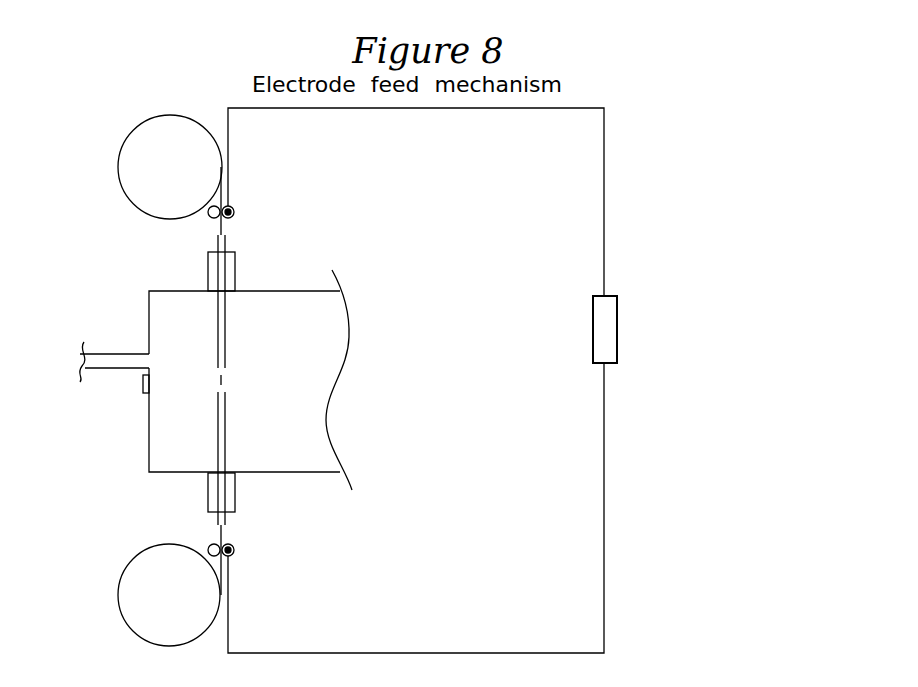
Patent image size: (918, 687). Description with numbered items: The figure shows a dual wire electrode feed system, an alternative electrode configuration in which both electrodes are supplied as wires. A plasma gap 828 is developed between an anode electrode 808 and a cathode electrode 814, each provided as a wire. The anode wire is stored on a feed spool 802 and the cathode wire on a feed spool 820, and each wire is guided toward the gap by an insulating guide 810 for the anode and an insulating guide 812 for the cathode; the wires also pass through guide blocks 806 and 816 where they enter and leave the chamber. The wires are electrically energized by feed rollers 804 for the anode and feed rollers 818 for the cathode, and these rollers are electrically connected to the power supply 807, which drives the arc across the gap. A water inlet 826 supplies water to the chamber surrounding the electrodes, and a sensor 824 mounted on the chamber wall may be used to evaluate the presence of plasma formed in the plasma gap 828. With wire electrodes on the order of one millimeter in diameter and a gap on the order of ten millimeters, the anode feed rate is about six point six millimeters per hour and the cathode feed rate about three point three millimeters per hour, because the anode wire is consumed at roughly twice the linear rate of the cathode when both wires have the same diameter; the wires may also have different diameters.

The feed spool 802 is at (119, 150).
The feed rollers 804 is at (221, 217).
The upper electrode guide 806 is at (208, 272).
The power supply 807 is at (681, 329).
The anode electrode 808 is at (222, 340).
The insulating guide 810 is at (226, 348).
The insulating guide 812 is at (226, 416).
The cathode electrode 814 is at (222, 420).
The lower electrode guide 816 is at (208, 492).
The feed rollers 818 is at (221, 545).
The feed spool 820 is at (119, 612).
The sensor 824 is at (143, 385).
The water inlet 826 is at (80, 366).
The plasma gap 828 is at (224, 380).